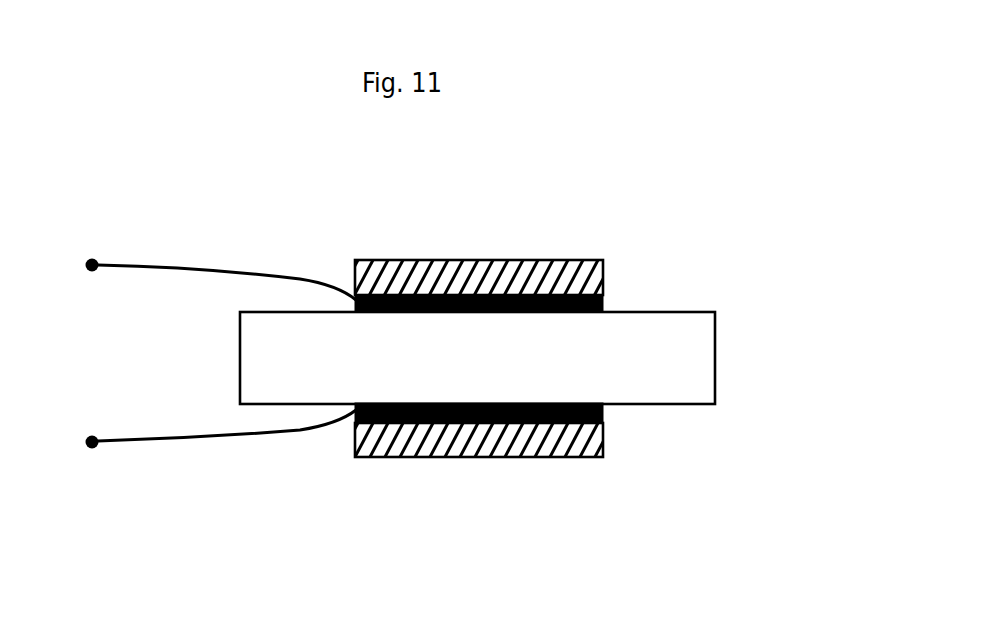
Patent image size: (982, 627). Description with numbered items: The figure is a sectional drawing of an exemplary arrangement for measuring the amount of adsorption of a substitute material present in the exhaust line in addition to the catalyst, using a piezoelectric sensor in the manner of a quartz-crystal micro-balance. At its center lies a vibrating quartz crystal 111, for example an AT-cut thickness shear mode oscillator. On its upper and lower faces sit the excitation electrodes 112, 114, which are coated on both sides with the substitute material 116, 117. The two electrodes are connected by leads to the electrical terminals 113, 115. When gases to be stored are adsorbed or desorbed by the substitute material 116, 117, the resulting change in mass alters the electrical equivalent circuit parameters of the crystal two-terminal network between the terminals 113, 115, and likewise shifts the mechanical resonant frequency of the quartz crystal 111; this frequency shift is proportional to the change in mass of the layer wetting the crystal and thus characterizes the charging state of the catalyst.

The vibrating quartz crystal 111 is at (715, 353).
The excitation electrode 112 is at (603, 307).
The electrical terminal 113 is at (193, 276).
The excitation electrode 114 is at (603, 412).
The electrical terminal 115 is at (193, 432).
The substitute material 116 is at (600, 258).
The substitute material 117 is at (603, 458).